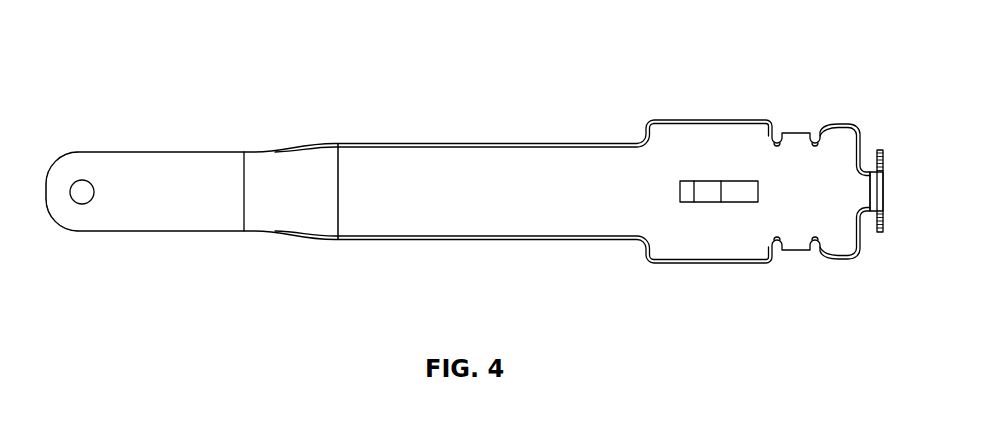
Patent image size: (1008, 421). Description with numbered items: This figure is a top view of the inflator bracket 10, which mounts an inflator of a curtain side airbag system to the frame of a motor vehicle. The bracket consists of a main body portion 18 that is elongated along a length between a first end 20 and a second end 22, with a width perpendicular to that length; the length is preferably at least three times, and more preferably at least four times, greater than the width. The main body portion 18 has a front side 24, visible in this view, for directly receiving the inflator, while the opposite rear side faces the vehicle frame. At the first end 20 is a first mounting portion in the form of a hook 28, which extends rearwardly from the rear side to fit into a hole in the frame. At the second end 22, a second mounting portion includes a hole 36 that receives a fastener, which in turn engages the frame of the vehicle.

The inflator bracket 10 is at (797, 30).
The main body portion 18 is at (409, 246).
The first end 20 is at (886, 226).
The second end 22 is at (46, 200).
The front side 24 is at (485, 194).
The hook 28 is at (880, 150).
The hole 36 is at (83, 193).